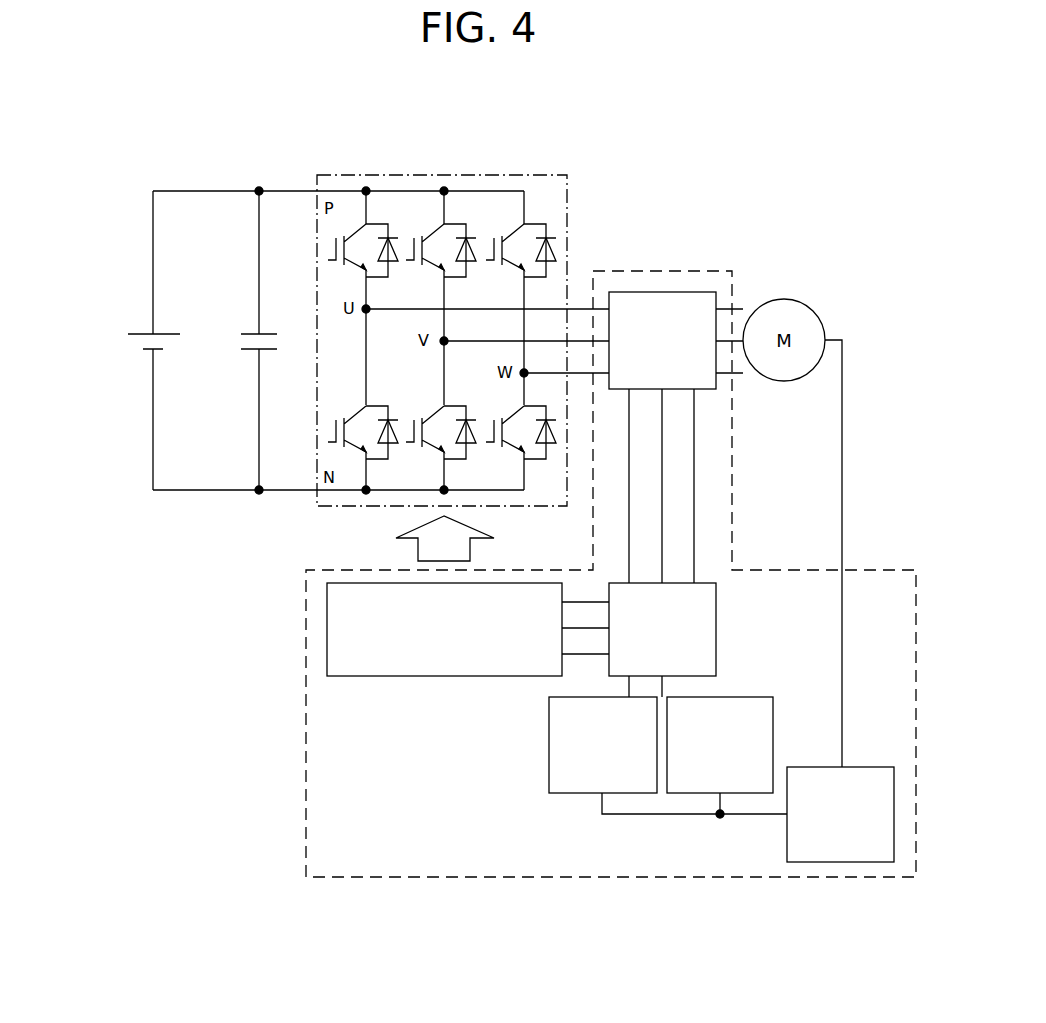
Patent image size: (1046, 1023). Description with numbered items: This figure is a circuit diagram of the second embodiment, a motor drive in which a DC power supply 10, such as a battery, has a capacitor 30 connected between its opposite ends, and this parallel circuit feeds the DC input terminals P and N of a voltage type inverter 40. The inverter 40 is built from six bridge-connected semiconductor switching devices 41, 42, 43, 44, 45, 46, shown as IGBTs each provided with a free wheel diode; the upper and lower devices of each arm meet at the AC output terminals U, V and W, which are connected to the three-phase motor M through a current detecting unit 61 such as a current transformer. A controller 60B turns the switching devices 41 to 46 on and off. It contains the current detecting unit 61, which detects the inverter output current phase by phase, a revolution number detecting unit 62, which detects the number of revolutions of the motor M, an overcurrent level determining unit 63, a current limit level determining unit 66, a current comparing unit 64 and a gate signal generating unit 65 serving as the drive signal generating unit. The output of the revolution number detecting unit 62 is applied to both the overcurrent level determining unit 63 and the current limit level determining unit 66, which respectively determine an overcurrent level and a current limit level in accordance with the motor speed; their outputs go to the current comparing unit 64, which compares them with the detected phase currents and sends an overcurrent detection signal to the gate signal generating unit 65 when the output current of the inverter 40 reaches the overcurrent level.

The DC power supply 10 is at (147, 327).
The capacitor 30 is at (250, 325).
The voltage type inverter 40 is at (361, 174).
The semiconductor switching device 41 is at (330, 258).
The semiconductor switching device 42 is at (328, 430).
The semiconductor switching device 43 is at (417, 233).
The semiconductor switching device 44 is at (418, 452).
The semiconductor switching device 45 is at (502, 233).
The semiconductor switching device 46 is at (496, 452).
The controller 60B is at (305, 690).
The current detecting unit 61 is at (659, 297).
The revolution number detecting unit 62 is at (865, 775).
The overcurrent level determining unit 63 is at (750, 705).
The current comparing unit 64 is at (710, 636).
The gate signal generating unit 65 is at (428, 665).
The current limit level determining unit 66 is at (553, 755).